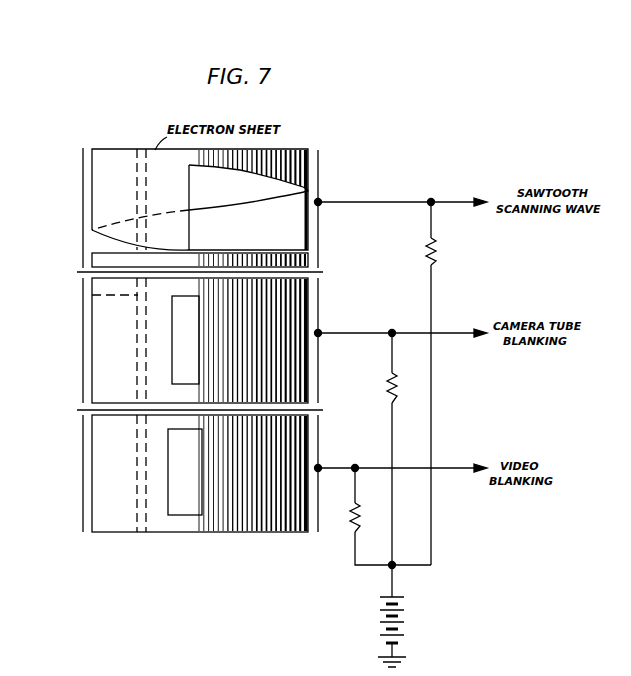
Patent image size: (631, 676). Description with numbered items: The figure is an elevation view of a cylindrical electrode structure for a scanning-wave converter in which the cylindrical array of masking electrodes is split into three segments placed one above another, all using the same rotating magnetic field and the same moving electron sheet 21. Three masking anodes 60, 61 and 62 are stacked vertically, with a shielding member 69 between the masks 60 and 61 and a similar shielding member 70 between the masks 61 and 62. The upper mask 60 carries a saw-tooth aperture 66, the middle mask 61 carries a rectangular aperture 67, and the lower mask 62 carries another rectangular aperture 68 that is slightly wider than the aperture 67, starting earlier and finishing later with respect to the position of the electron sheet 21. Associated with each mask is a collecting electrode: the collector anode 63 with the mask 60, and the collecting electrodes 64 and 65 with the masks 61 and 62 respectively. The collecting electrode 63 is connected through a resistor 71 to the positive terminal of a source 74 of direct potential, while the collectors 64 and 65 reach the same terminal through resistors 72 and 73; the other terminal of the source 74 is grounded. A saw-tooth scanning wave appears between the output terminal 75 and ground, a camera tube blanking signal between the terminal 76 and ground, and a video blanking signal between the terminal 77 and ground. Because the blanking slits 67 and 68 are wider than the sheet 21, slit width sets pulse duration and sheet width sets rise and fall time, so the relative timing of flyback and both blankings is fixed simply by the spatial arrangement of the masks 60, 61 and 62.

The electron sheet 21 is at (86, 298).
The masking anode 60 is at (309, 153).
The masking anode 61 is at (305, 358).
The masking anode 62 is at (305, 496).
The collector anode 63 is at (83, 201).
The collecting electrode 64 is at (83, 336).
The collecting electrode 65 is at (83, 468).
The saw-tooth aperture 66 is at (200, 207).
The rectangular aperture 67 is at (185, 340).
The rectangular aperture 68 is at (185, 472).
The shielding member 69 is at (320, 272).
The shielding member 70 is at (321, 410).
The resistor 71 is at (437, 256).
The resistor 72 is at (396, 395).
The resistor 73 is at (353, 530).
The source of direct potential 74 is at (402, 625).
The output terminal 75 is at (445, 202).
The output terminal 76 is at (448, 333).
The output terminal 77 is at (449, 468).